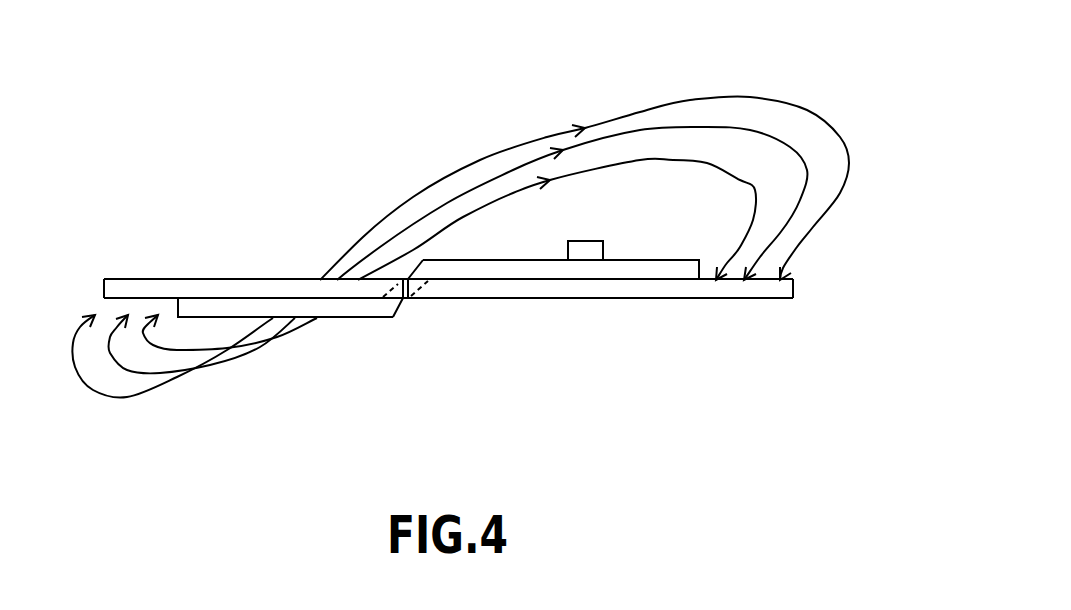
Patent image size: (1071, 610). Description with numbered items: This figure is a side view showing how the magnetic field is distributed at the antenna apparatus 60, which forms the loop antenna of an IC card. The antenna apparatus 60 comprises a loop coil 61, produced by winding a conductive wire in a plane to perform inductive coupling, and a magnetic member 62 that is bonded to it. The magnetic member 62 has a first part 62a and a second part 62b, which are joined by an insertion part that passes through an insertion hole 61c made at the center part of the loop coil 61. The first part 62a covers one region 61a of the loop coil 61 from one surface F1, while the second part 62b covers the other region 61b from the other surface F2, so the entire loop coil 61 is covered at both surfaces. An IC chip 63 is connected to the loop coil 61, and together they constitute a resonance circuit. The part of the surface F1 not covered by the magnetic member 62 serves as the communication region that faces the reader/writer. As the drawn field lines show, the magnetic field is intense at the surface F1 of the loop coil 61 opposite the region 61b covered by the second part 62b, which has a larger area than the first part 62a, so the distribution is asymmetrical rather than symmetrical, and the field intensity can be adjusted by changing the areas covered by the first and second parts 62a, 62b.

The antenna apparatus 60 is at (327, 143).
The loop coil 61 is at (438, 294).
The one region of the loop coil 61a is at (298, 293).
The other region of the loop coil 61b is at (610, 280).
The insertion hole 61c is at (373, 300).
The magnetic member 62 is at (448, 292).
The first part 62a is at (165, 288).
The second part 62b is at (750, 296).
The IC chip 63 is at (588, 240).
The one surface of the loop coil F1 is at (241, 290).
The other surface of the loop coil F2 is at (660, 300).